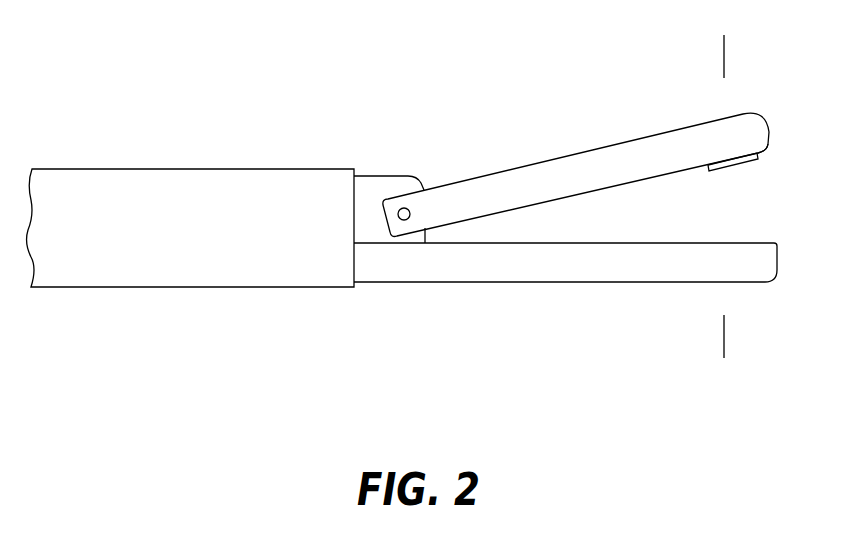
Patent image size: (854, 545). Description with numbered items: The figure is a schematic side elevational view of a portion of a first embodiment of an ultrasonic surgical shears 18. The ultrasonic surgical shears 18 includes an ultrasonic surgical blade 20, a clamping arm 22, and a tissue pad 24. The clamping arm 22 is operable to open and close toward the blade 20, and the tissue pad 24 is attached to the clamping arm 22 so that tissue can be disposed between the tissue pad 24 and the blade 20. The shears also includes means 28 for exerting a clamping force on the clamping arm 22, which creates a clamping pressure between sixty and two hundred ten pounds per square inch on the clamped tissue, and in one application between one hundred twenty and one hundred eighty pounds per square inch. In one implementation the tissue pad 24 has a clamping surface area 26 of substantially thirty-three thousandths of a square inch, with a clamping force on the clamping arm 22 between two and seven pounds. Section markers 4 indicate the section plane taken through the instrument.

The ultrasonic surgical shears 18 is at (109, 86).
The ultrasonic surgical blade 20 is at (562, 270).
The clamping arm 22 is at (574, 168).
The tissue pad 24 is at (768, 156).
The clamping surface area 26 is at (732, 168).
The means for exerting a clamping force 28 is at (383, 176).
The section line 4- 4 is at (716, 45).